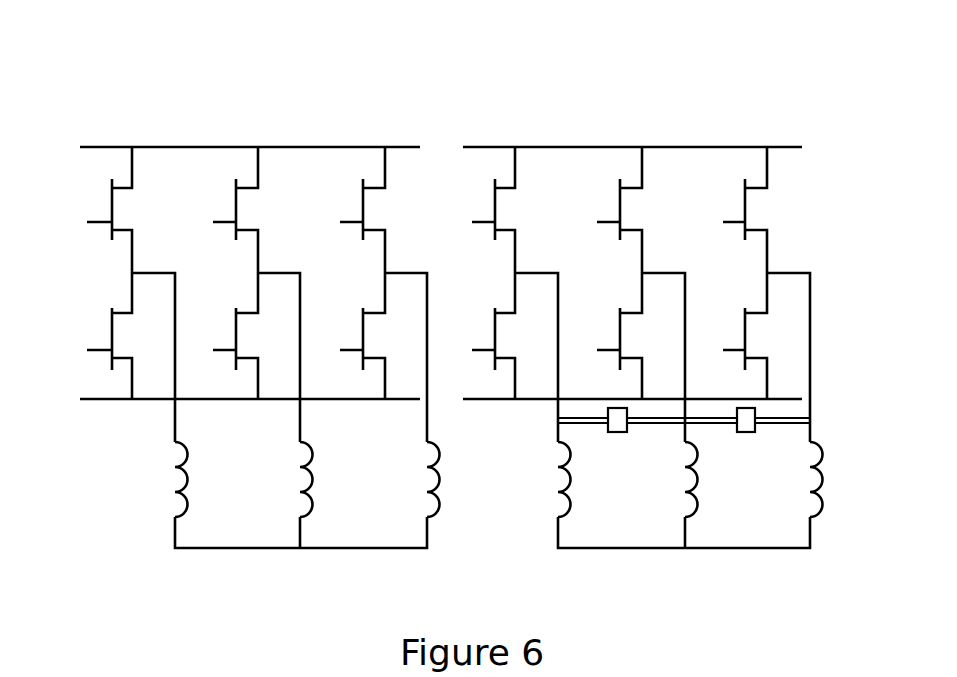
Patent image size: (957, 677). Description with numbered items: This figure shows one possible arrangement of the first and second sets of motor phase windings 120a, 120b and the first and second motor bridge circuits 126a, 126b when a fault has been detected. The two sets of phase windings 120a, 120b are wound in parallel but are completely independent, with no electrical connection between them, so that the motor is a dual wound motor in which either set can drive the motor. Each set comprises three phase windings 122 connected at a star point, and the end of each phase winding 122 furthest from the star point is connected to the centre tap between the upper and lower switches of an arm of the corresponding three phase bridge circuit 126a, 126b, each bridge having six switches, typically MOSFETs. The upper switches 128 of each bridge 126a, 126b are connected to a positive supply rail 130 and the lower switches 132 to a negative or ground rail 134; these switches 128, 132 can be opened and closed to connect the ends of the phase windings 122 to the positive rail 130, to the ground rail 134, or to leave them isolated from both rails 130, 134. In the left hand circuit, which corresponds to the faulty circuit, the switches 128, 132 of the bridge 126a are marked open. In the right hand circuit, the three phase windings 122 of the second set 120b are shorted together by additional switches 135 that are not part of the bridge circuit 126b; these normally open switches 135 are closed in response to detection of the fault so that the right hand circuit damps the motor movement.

The first set of phase windings 120a is at (258, 560).
The second set of phase windings 120b is at (673, 565).
The phase winding 122 is at (790, 483).
The first motor bridge circuit 126a is at (290, 108).
The second motor bridge circuit 126b is at (687, 107).
The upper switch 128 is at (350, 192).
The positive supply rail 130 is at (105, 143).
The lower switch 132 is at (352, 322).
The ground rail 134 is at (88, 412).
The additional switch 135 is at (606, 425).